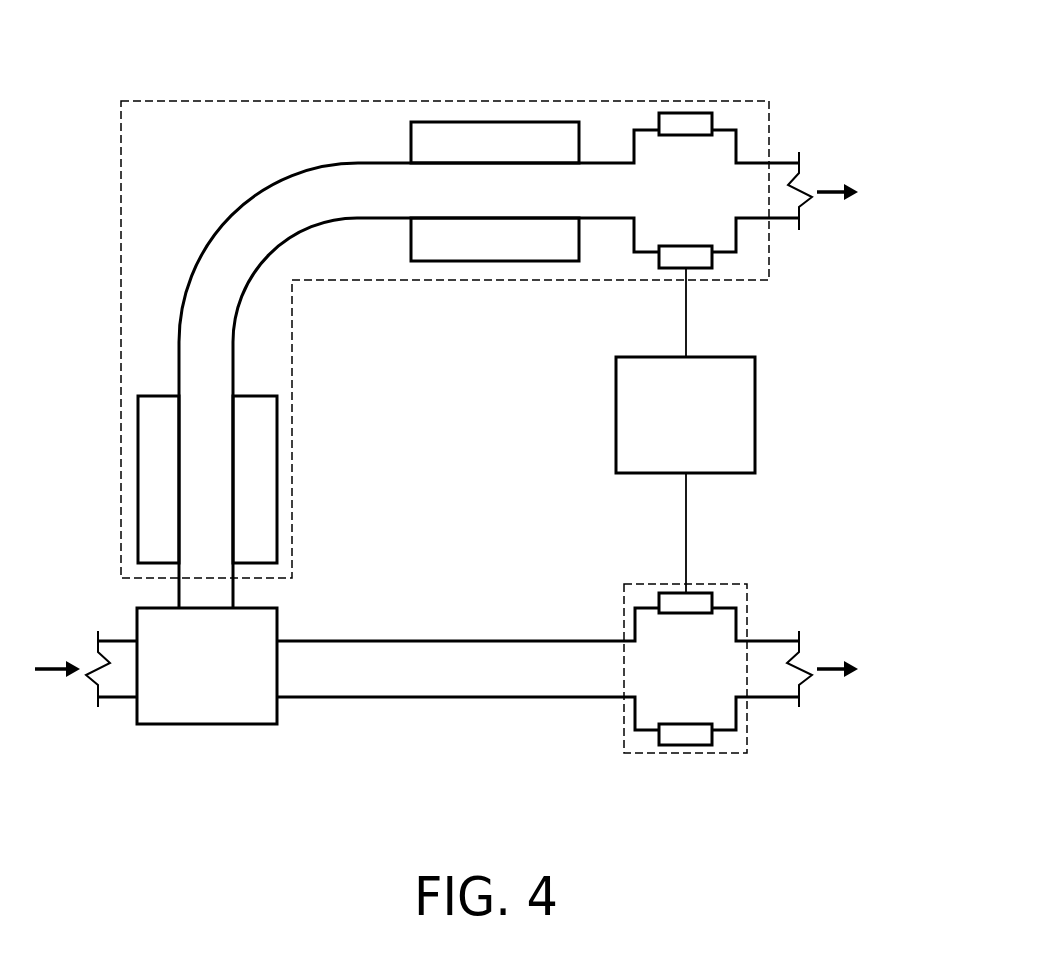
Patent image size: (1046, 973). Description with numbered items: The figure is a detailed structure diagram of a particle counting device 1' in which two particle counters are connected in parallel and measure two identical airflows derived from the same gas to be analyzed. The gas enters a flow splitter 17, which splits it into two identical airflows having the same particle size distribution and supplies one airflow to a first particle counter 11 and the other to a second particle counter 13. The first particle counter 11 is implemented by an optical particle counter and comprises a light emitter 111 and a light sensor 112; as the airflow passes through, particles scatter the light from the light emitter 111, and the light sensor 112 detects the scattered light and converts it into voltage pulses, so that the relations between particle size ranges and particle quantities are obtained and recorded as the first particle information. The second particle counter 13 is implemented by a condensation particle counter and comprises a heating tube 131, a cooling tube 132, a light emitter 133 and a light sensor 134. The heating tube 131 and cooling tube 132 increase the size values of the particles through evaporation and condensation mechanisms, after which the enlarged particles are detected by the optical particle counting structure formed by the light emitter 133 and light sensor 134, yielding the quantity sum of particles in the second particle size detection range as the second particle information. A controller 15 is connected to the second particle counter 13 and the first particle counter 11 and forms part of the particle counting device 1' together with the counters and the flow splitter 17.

The particle counting device 1' is at (446, 363).
The second particle counter 13 is at (175, 100).
The heating tube 131 is at (277, 420).
The cooling tube 132 is at (520, 261).
The light emitter 133 is at (698, 113).
The light sensor 134 is at (700, 268).
The controller 15 is at (728, 473).
The first particle counter 11 is at (748, 605).
The light emitter 111 is at (700, 745).
The light sensor 112 is at (700, 593).
The flow splitter 17 is at (163, 724).